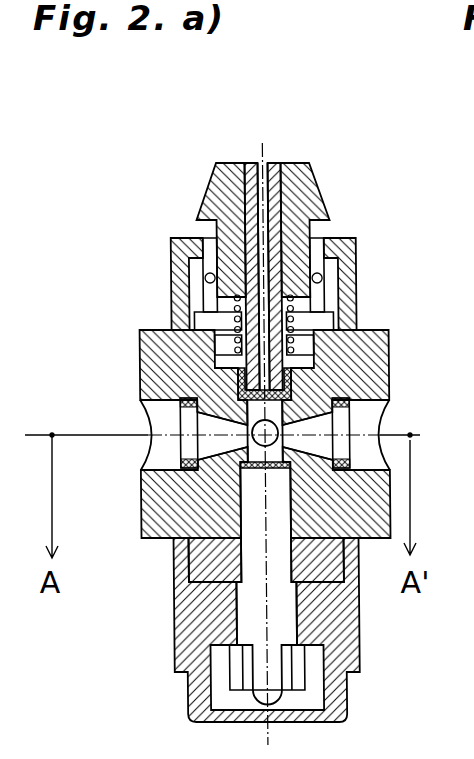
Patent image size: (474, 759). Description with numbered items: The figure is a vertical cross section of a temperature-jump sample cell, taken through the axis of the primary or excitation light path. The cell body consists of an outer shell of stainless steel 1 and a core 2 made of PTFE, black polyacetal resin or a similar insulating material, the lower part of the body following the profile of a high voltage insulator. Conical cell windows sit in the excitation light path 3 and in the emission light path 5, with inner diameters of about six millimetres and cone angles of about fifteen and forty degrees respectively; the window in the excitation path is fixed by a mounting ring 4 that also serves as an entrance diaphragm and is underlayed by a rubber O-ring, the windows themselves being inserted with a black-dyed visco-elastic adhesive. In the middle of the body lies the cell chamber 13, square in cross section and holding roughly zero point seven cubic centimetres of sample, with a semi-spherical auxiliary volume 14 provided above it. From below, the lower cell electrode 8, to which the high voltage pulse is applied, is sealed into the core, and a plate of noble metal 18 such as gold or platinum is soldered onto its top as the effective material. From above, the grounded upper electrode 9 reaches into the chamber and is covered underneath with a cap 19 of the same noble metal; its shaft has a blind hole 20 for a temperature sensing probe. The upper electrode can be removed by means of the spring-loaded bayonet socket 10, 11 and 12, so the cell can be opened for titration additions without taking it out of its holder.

The outer shell of stainless steel 1 is at (382, 345).
The core 2 is at (267, 630).
The conical cell window in the excitation light path 3 is at (264, 437).
The mounting ring 4 is at (178, 452).
The conical cell window in the emission light path 5 is at (285, 442).
The lower cell electrode 8 is at (266, 583).
The upper electrode 9 is at (273, 165).
The spring-loaded bayonet socket 10 is at (322, 183).
The spring-loaded bayonet socket 11 is at (347, 250).
The spring-loaded bayonet socket 12 is at (303, 327).
The cell chamber 13 is at (248, 430).
The semi-spherical auxiliary volume 14 is at (232, 385).
The plate of noble metal 18 is at (300, 477).
The cap 19 is at (318, 387).
The blind hole 20 is at (260, 163).